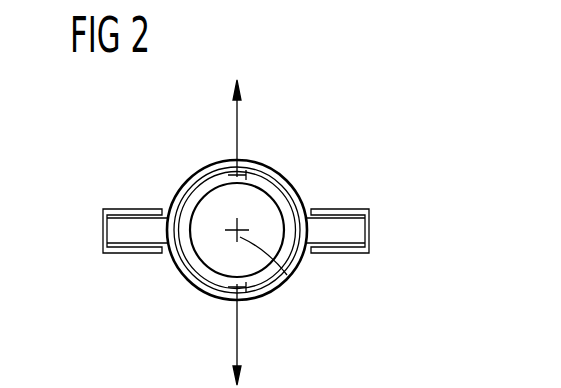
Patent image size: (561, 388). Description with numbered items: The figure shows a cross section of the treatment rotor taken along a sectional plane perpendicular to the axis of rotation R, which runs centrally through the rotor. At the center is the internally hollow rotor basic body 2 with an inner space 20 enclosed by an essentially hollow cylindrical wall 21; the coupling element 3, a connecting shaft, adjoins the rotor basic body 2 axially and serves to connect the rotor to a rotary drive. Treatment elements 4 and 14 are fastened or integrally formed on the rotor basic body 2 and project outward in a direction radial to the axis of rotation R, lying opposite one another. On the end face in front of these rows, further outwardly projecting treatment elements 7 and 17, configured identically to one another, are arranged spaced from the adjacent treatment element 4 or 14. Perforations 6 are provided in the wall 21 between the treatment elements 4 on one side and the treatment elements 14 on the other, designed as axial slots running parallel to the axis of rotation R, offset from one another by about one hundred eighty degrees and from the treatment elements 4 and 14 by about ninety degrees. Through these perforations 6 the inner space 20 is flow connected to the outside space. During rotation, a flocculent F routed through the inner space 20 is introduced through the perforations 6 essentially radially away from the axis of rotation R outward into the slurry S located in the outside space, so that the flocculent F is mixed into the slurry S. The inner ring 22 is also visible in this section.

The rotor basic body 2 is at (291, 192).
The coupling element 3 is at (192, 183).
The treatment element 4 is at (354, 210).
The perforation 6 is at (248, 175).
The treatment element 7 is at (350, 231).
The treatment element 14 is at (122, 212).
The treatment element 17 is at (115, 233).
The inner space 20 is at (212, 247).
The wall 21 is at (291, 284).
The inner bore 22 is at (258, 262).
The axis of rotation R is at (294, 260).
The slurry S is at (176, 124).
The flocculent F is at (235, 116).